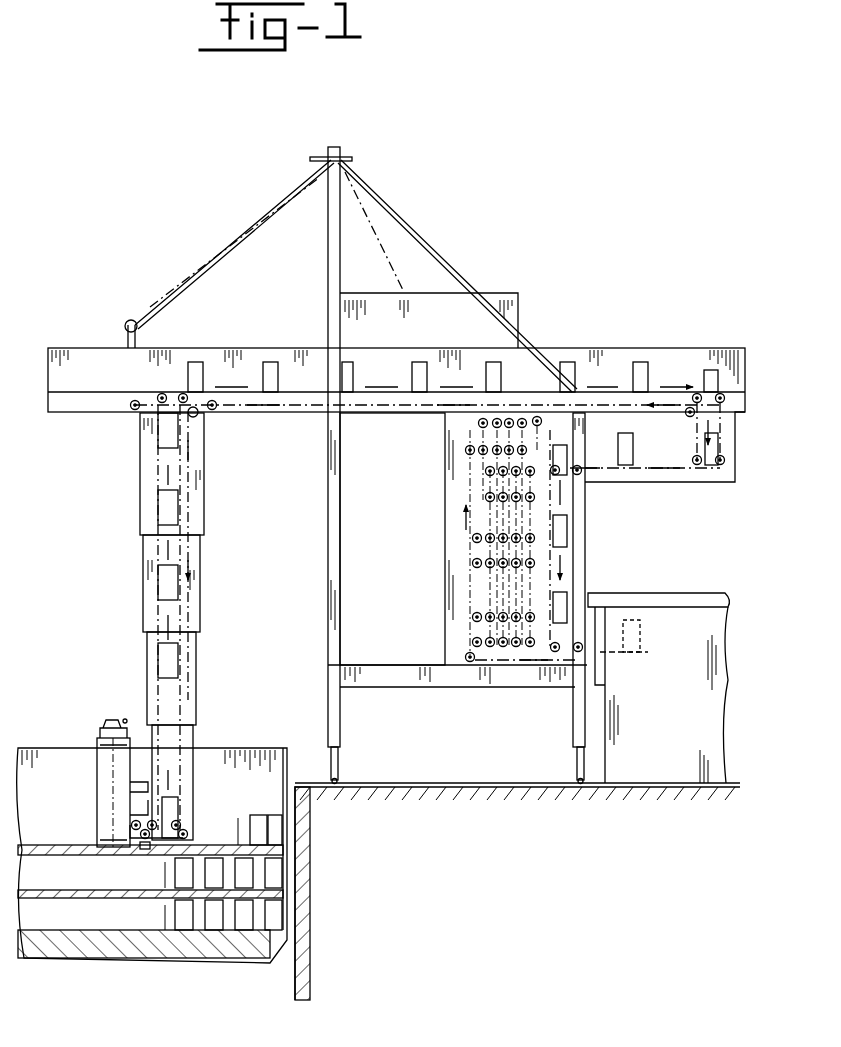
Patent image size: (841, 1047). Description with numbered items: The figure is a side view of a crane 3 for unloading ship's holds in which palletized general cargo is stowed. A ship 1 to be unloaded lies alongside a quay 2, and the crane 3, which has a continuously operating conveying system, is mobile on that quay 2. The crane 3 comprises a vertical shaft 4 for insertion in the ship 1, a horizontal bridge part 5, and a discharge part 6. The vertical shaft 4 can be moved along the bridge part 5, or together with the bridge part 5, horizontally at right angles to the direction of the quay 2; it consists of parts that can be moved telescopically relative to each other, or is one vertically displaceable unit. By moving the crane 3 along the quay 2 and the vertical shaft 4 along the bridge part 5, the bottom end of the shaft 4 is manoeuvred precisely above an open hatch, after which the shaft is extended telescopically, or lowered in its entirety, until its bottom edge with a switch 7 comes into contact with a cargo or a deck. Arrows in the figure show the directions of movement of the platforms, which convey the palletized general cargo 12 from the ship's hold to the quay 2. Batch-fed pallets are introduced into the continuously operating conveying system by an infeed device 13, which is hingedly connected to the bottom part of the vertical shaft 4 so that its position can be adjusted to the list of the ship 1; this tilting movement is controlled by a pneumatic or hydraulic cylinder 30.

The ship 1 is at (160, 955).
The quay 2 is at (634, 806).
The crane 3 is at (326, 602).
The vertical shaft 4 is at (141, 572).
The horizontal bridge part 5 is at (606, 350).
The discharge part 6 is at (566, 501).
The switch 7 is at (145, 850).
The palletized general cargo 12 is at (160, 655).
The infeed device 13 is at (98, 790).
The pneumatic or hydraulic cylinder 30 is at (146, 782).